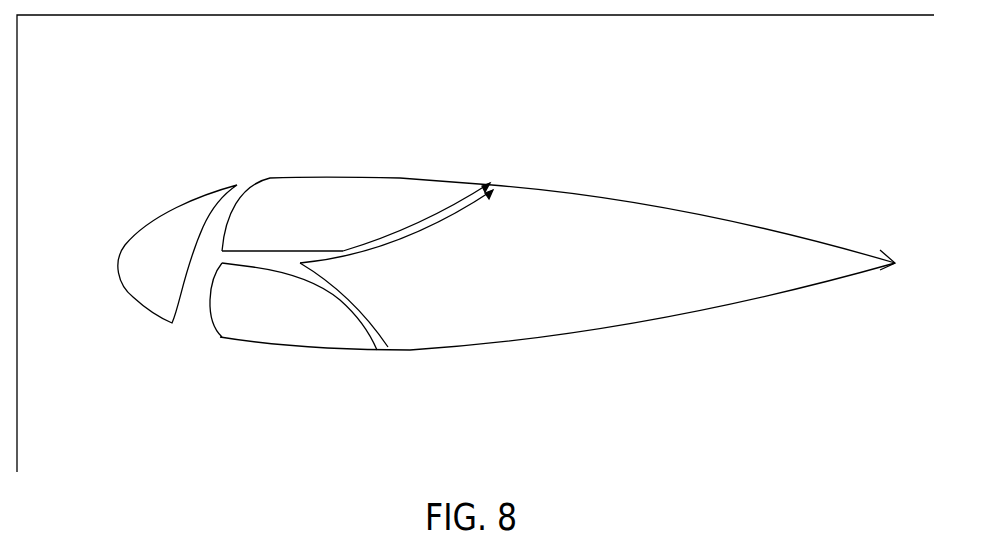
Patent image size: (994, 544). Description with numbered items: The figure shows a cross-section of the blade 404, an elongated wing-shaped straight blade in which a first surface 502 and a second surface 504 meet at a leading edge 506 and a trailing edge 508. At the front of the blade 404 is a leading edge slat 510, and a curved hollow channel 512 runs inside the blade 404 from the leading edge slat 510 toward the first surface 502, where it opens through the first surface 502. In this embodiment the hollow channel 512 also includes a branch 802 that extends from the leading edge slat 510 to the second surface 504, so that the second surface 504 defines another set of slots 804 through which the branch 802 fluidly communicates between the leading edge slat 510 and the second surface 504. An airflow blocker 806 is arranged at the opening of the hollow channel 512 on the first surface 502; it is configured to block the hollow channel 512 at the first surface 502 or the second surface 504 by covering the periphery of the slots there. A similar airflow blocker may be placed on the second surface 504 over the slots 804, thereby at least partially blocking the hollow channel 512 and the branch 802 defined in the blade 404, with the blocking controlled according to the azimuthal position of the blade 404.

The blade 404 is at (203, 88).
The first surface 502 is at (660, 207).
The second surface 504 is at (693, 312).
The leading edge 506 is at (118, 258).
The trailing edge 508 is at (893, 258).
The leading edge slat 510 is at (170, 294).
The hollow channel 512 is at (345, 254).
The branch 802 is at (355, 318).
The slots 804 is at (387, 347).
The airflow blocker 806 is at (492, 185).